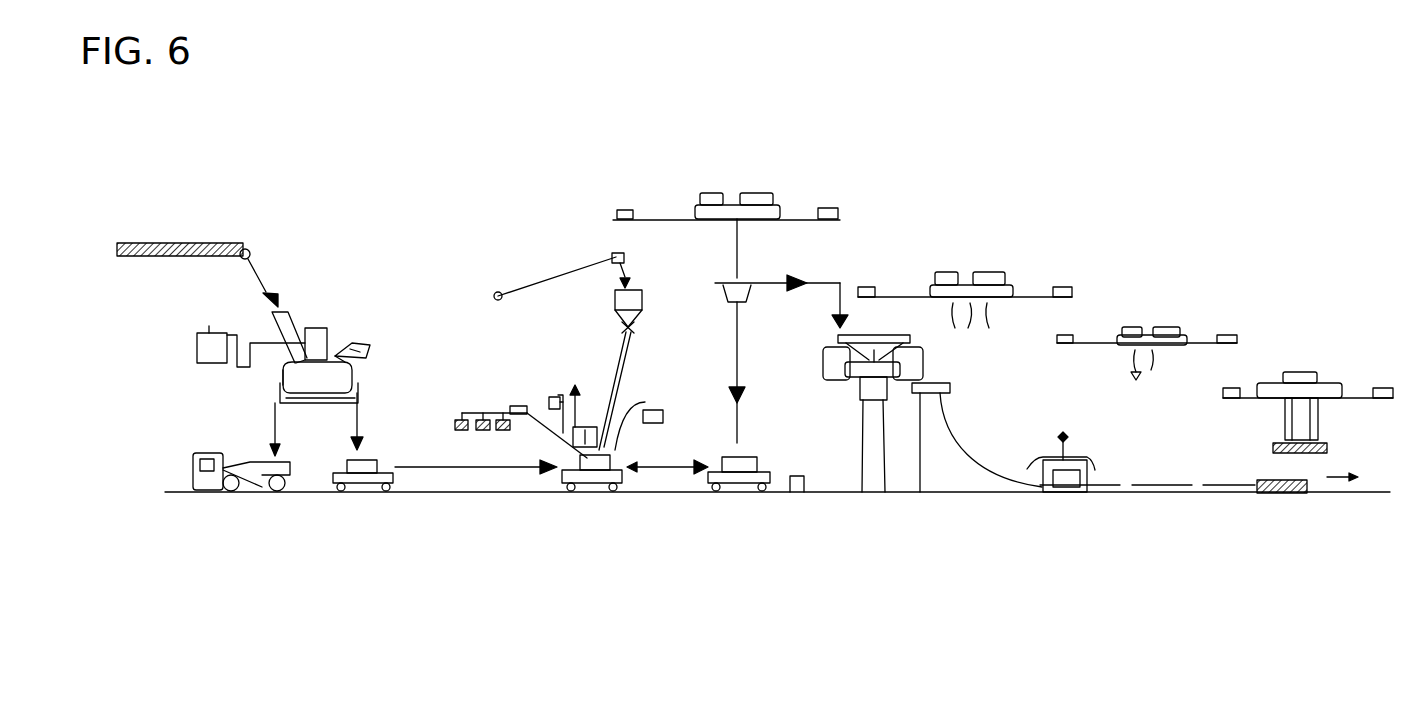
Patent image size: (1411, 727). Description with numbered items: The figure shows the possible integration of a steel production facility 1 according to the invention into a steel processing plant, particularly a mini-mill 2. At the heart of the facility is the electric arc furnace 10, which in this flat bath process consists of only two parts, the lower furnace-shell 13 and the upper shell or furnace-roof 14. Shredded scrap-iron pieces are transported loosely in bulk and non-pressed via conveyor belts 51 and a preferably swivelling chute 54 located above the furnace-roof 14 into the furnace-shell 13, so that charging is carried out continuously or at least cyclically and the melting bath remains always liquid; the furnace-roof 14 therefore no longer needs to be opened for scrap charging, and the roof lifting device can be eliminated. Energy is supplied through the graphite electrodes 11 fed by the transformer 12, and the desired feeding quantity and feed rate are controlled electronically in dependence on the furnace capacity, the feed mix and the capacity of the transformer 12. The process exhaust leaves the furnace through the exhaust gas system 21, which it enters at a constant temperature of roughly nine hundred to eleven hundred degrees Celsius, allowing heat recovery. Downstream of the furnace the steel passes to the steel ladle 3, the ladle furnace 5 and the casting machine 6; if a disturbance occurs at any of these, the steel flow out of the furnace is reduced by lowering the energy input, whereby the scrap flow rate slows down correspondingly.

The steel production facility 1 is at (347, 185).
The mini-mill 2 is at (1168, 243).
The steel ladle 3 is at (363, 463).
The ladle furnace 5 is at (587, 467).
The casting machine 6 is at (940, 450).
The electric arc furnace 10 is at (250, 420).
The graphite electrodes 11 is at (316, 328).
The transformer 12 is at (197, 350).
The furnace-shell 13 is at (350, 385).
The furnace-roof 14 is at (278, 362).
The exhaust gas system 21 is at (360, 342).
The conveyor belts 51 is at (172, 244).
The swivelling chute 54 is at (280, 325).